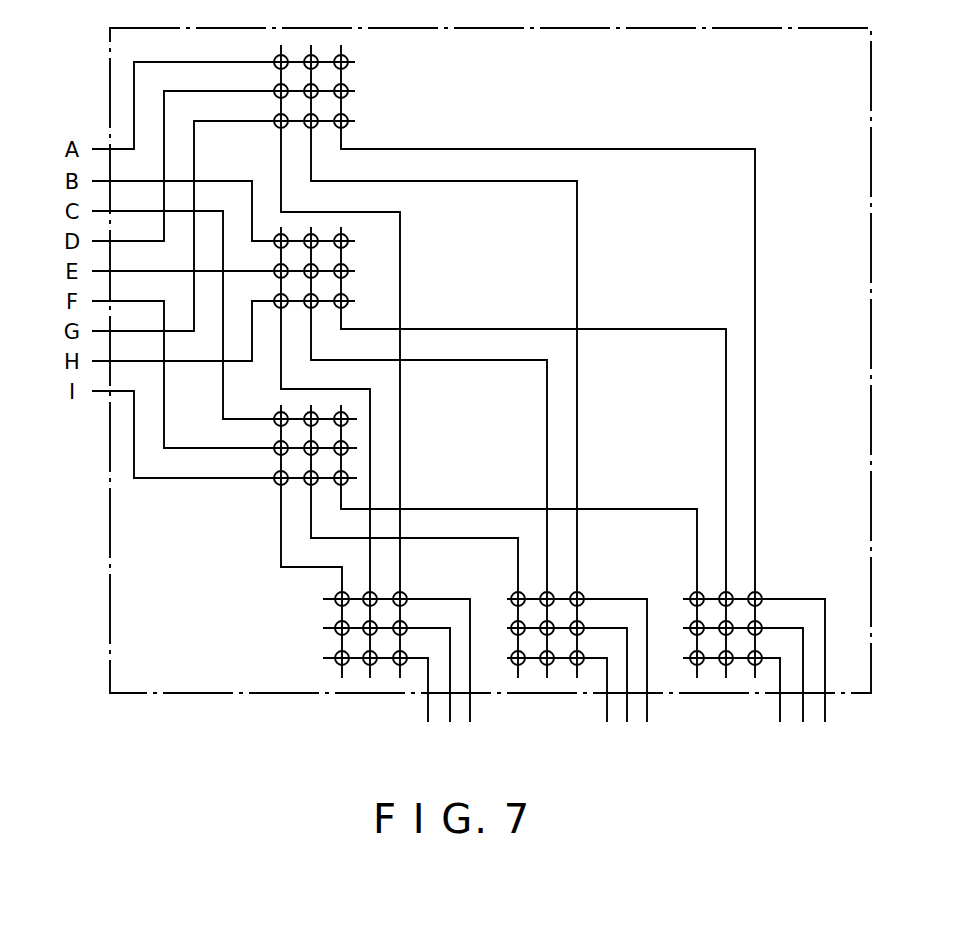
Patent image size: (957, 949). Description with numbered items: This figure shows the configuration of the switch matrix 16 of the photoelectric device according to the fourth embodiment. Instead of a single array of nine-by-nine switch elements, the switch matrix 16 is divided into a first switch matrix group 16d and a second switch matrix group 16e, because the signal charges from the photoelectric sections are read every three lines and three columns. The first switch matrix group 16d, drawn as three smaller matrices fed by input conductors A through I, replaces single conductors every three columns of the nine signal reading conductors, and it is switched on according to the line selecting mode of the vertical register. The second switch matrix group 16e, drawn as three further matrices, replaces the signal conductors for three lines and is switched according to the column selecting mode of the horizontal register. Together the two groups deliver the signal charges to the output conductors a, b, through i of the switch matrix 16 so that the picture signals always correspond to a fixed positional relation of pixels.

The switch matrix 16 is at (742, 45).
The first switch matrix group 16d is at (365, 97).
The second switch matrix group 16e is at (440, 593).